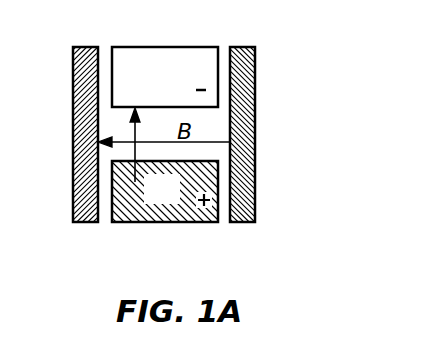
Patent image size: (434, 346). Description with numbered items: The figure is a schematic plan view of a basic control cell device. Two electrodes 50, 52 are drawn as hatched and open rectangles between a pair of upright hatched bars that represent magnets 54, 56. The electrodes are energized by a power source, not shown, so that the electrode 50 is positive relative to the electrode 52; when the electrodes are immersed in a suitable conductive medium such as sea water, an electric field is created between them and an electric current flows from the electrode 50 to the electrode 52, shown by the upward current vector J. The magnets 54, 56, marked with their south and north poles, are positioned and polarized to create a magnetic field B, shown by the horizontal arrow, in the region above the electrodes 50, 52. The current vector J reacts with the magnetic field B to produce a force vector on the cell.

The electrode 50 is at (178, 202).
The electrode 52 is at (174, 86).
The magnet 54 is at (83, 47).
The magnet 56 is at (241, 47).